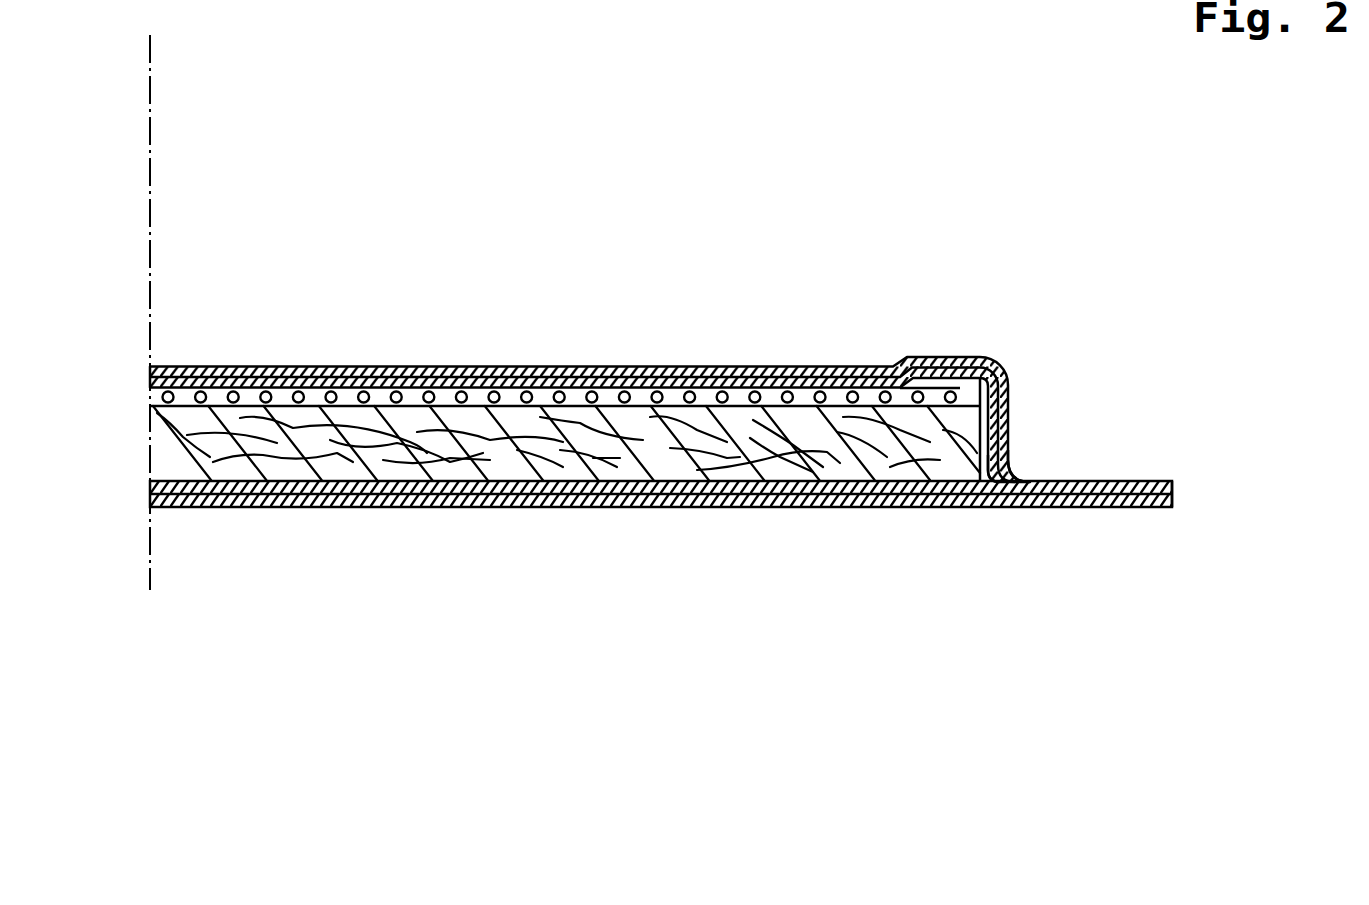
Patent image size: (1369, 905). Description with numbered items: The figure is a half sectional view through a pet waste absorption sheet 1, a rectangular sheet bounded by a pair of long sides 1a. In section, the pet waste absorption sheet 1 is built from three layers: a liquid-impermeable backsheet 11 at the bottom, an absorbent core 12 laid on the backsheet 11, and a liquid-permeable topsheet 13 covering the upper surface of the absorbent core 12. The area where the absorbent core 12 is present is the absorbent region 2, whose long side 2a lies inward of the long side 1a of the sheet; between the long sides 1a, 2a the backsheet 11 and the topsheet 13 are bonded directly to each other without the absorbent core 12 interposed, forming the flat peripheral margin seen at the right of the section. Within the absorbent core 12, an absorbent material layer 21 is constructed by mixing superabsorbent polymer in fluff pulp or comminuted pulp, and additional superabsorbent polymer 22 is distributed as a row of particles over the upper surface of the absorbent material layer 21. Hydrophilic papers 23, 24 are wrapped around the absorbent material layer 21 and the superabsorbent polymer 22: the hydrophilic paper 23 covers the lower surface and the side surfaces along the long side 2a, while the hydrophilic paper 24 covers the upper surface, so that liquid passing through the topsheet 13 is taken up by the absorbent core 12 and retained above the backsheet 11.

The pet waste absorption sheet 1 is at (1014, 295).
The long side 1a is at (1180, 491).
The absorbent region 2 is at (710, 352).
The long side of absorbent region 2a is at (1000, 480).
The liquid-impermeable backsheet 11 is at (497, 507).
The absorbent core 12 is at (143, 378).
The liquid-permeable topsheet 13 is at (447, 375).
The absorbent material layer 21 is at (322, 462).
The superabsorbent polymer 22 is at (331, 388).
The hydrophilic paper 23 is at (680, 486).
The hydrophilic paper 24 is at (551, 385).